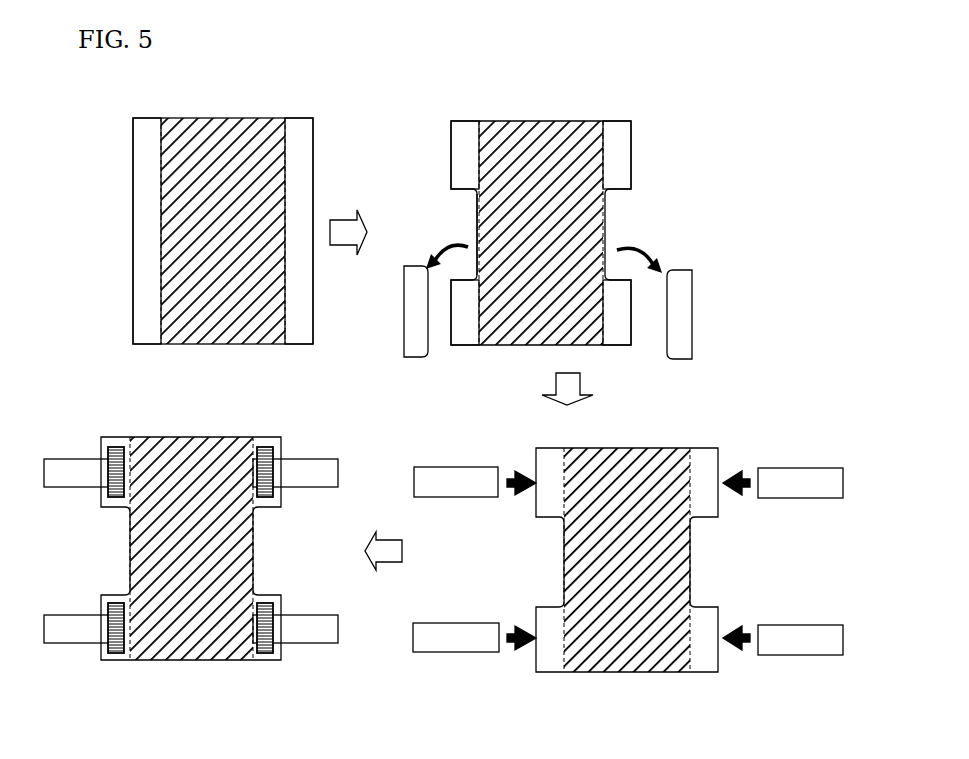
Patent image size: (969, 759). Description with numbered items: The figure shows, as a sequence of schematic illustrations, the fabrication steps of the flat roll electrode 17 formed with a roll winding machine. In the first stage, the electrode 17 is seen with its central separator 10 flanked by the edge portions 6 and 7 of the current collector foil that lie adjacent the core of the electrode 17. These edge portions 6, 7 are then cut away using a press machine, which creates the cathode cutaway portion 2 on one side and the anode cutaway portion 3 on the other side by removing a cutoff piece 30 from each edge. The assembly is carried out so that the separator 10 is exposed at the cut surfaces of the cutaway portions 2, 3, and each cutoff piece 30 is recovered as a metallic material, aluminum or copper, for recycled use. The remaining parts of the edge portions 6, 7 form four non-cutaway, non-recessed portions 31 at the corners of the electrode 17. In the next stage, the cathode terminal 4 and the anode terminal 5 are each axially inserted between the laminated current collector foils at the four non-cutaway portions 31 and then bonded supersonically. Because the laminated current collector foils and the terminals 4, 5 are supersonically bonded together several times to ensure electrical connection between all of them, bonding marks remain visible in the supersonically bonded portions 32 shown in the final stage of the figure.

The flat roll electrode 17 is at (330, 71).
The separator 10 is at (222, 214).
The edge portion 7 is at (141, 175).
The edge portion 6 is at (305, 163).
The cathode cutaway portion 2 is at (612, 232).
The anode cutaway portion 3 is at (465, 227).
The non-cutaway portion 31 is at (473, 160).
The cutoff piece 30 is at (683, 305).
The anode terminal 5 is at (480, 485).
The cathode terminal 4 is at (790, 480).
The supersonically bonded portion 32 is at (113, 462).